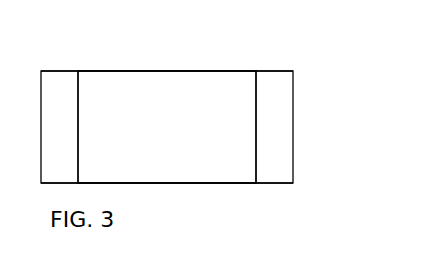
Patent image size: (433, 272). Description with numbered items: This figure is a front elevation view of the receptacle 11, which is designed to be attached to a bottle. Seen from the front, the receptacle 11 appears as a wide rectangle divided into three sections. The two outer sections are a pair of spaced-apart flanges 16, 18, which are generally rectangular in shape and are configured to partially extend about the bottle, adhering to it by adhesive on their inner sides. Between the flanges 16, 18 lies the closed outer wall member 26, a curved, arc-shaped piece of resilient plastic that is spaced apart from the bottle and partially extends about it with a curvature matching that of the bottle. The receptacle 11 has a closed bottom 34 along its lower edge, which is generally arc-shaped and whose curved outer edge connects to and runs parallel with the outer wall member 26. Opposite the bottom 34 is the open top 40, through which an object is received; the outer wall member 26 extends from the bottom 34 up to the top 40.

The receptacle 11 is at (235, 61).
The flange 16 is at (72, 141).
The flange 18 is at (286, 141).
The outer wall member 26 is at (178, 141).
The open top 40 is at (139, 70).
The closed bottom 34 is at (167, 183).